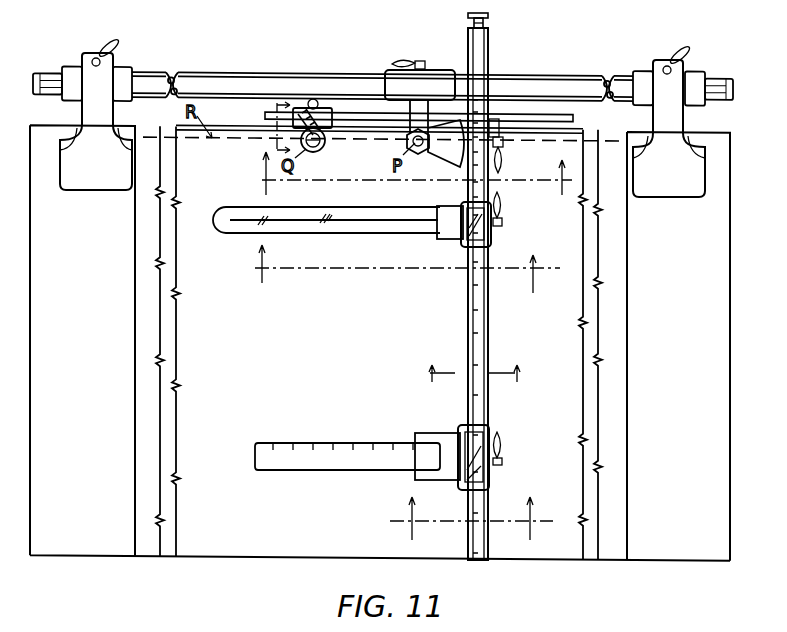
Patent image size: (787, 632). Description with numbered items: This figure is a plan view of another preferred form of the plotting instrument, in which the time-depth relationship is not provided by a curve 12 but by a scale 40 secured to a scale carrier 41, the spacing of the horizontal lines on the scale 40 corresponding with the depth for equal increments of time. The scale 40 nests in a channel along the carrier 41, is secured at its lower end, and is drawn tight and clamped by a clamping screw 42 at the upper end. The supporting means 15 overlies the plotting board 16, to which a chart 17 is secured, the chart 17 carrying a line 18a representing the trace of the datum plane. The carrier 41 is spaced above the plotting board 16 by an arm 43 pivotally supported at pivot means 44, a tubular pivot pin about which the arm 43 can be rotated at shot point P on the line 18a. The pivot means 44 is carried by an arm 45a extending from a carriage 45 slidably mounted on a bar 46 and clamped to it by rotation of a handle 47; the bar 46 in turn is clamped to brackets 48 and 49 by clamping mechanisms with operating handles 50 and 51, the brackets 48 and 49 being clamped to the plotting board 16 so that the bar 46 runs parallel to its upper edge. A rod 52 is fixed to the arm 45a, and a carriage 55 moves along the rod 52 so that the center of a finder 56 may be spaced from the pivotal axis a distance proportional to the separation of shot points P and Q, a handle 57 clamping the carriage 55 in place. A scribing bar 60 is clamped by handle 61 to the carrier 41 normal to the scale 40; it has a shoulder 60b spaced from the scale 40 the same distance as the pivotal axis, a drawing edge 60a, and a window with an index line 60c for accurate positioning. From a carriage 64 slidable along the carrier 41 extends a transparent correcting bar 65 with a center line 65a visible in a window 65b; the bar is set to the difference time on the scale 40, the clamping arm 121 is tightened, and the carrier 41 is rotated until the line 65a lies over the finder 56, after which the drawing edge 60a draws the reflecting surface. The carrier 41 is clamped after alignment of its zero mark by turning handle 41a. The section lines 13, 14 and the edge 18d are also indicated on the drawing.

The curve 12 is at (406, 179).
The section line 13- 13 is at (399, 270).
The section line 14- 14 is at (473, 523).
The supporting means 15 is at (476, 363).
The plotting board 16 is at (742, 302).
The chart 17 is at (138, 540).
The line 18a is at (235, 138).
The plate edge 18d is at (553, 145).
The scale 40 is at (472, 305).
The scale carrier 41 is at (490, 53).
The handle 41a is at (503, 161).
The clamping screw 42 is at (487, 22).
The arm 43 is at (450, 155).
The pivot means 44 is at (418, 156).
The carriage 45 is at (437, 82).
The arm 45a is at (407, 110).
The bar 46 is at (148, 77).
The handle 47 is at (396, 58).
The bracket 48 is at (672, 123).
The bracket 49 is at (88, 107).
The operating handle 50 is at (677, 50).
The operating handle 51 is at (105, 46).
The rod 52 is at (574, 119).
The carriage 55 is at (320, 113).
The finder 56 is at (317, 152).
The handle 57 is at (303, 110).
The scribing bar 60 is at (283, 460).
The drawing edge 60a is at (312, 443).
The shoulder 60b is at (417, 435).
The index line 60c is at (470, 445).
The handle 61 is at (502, 444).
The carriage 64 is at (465, 238).
The correcting bar 65 is at (357, 233).
The line 65a is at (240, 223).
The window 65b is at (491, 238).
The clamping arm 121 is at (501, 204).